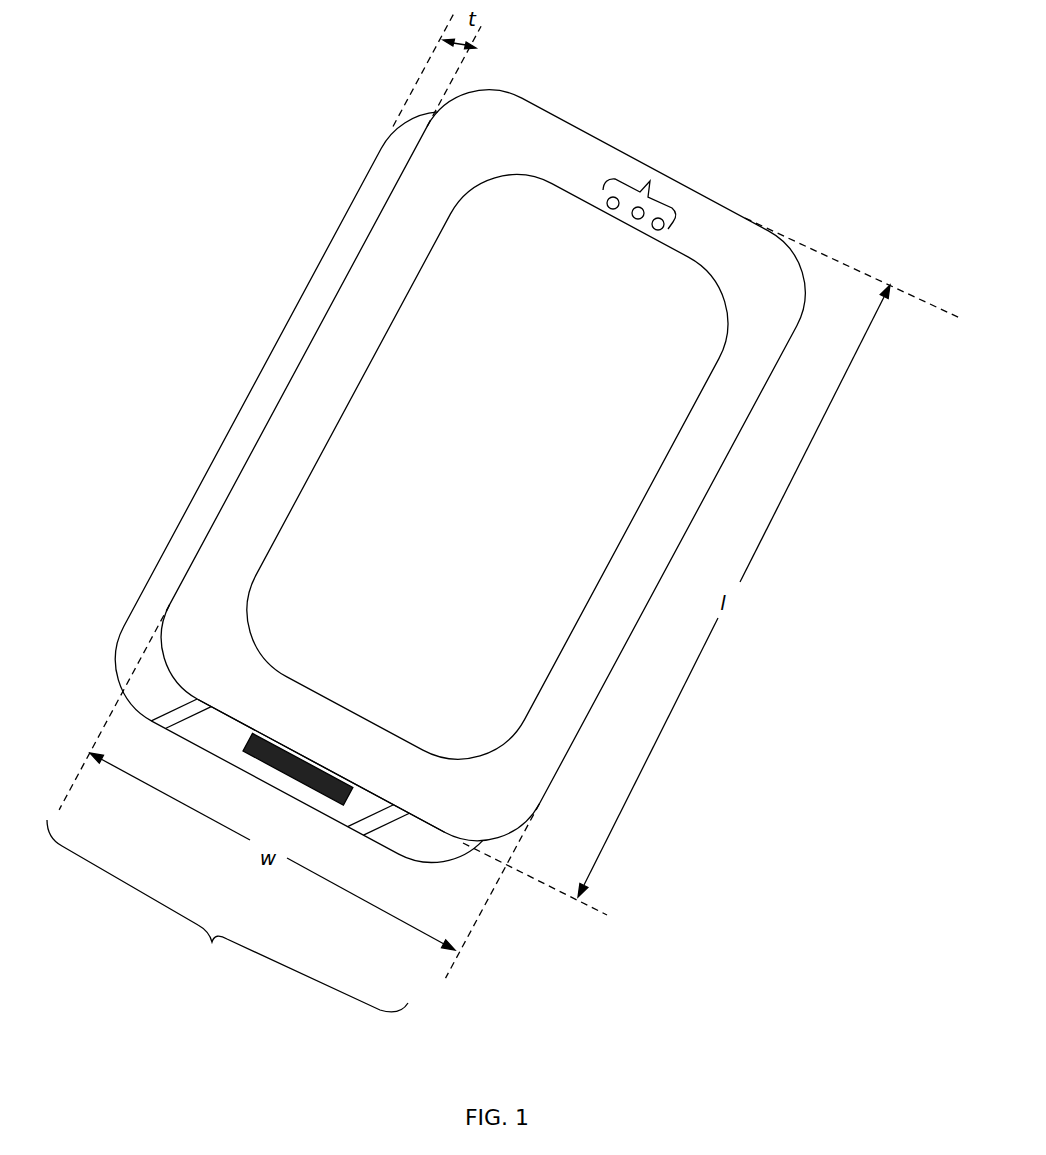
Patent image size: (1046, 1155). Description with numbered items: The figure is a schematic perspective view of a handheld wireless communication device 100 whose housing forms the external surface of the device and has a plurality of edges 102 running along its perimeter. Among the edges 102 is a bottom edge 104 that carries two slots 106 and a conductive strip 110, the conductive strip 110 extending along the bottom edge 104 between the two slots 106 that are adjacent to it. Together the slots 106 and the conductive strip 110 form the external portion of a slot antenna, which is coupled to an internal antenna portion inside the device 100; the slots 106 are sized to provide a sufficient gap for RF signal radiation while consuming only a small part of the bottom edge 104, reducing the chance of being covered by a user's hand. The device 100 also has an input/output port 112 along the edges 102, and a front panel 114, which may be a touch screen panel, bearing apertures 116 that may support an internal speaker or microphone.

The handheld wireless communication device 100 is at (758, 156).
The edges 102 is at (152, 592).
The bottom edge 104 is at (227, 916).
The slots 106 is at (161, 730).
The conductive strip 110 is at (362, 807).
The input/output (I/O) ports 112 is at (308, 765).
The front panel 114 is at (520, 413).
The apertures 116 is at (650, 181).